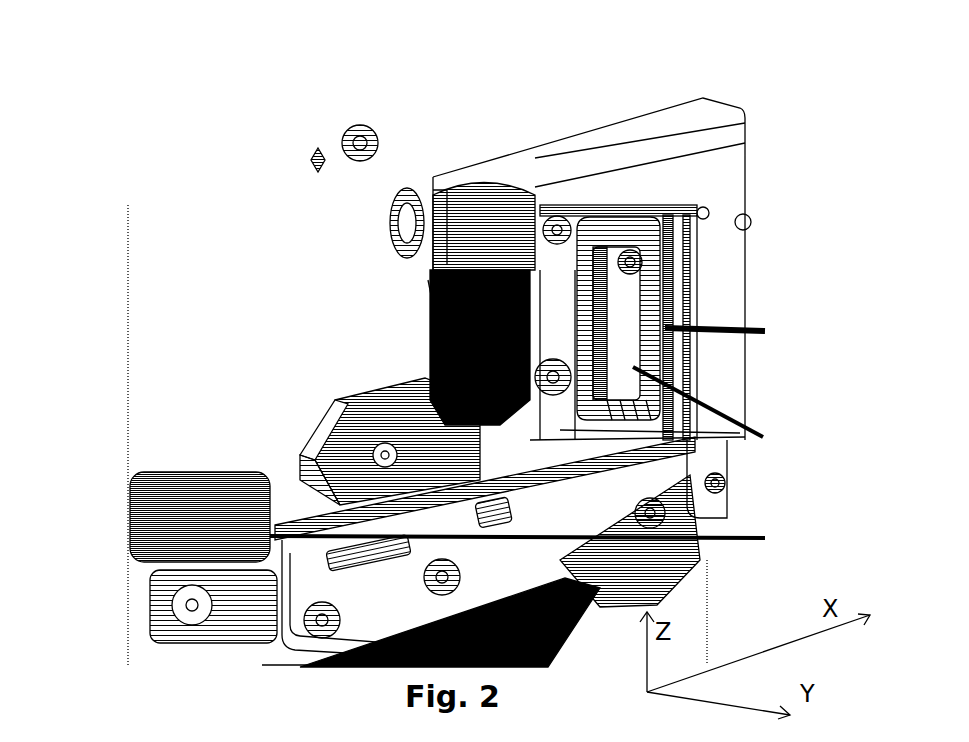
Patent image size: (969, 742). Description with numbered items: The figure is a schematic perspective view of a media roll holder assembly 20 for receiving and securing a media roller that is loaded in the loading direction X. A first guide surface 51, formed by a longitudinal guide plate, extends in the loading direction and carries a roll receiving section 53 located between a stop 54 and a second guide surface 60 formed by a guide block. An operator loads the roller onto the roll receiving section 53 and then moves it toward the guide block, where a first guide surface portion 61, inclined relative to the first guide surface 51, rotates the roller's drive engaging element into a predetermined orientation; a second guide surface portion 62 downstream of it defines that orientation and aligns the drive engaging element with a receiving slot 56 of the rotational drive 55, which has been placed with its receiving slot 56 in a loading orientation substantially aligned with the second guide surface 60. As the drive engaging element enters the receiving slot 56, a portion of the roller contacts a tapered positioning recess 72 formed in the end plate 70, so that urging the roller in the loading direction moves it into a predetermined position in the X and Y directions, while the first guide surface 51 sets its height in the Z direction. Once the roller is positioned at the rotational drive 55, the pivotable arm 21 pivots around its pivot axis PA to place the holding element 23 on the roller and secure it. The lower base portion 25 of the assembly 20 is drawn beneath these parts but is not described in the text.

The media roll holder assembly 20 is at (148, 78).
The pivotable arm 21 is at (695, 180).
The holding element 23 is at (480, 220).
The base plate 25 is at (548, 455).
The first guide surface 51 is at (365, 512).
The roll receiving section 53 is at (275, 538).
The stop 54 is at (155, 525).
The rotational drive 55 is at (430, 283).
The receiving slot 56 is at (485, 332).
The second guide surface 60 is at (276, 378).
The first guide surface portion 61 is at (305, 455).
The second guide surface portion 62 is at (367, 400).
The end plate 70 is at (665, 323).
The positioning recess 72 is at (637, 340).
The pivot axis PA is at (722, 483).